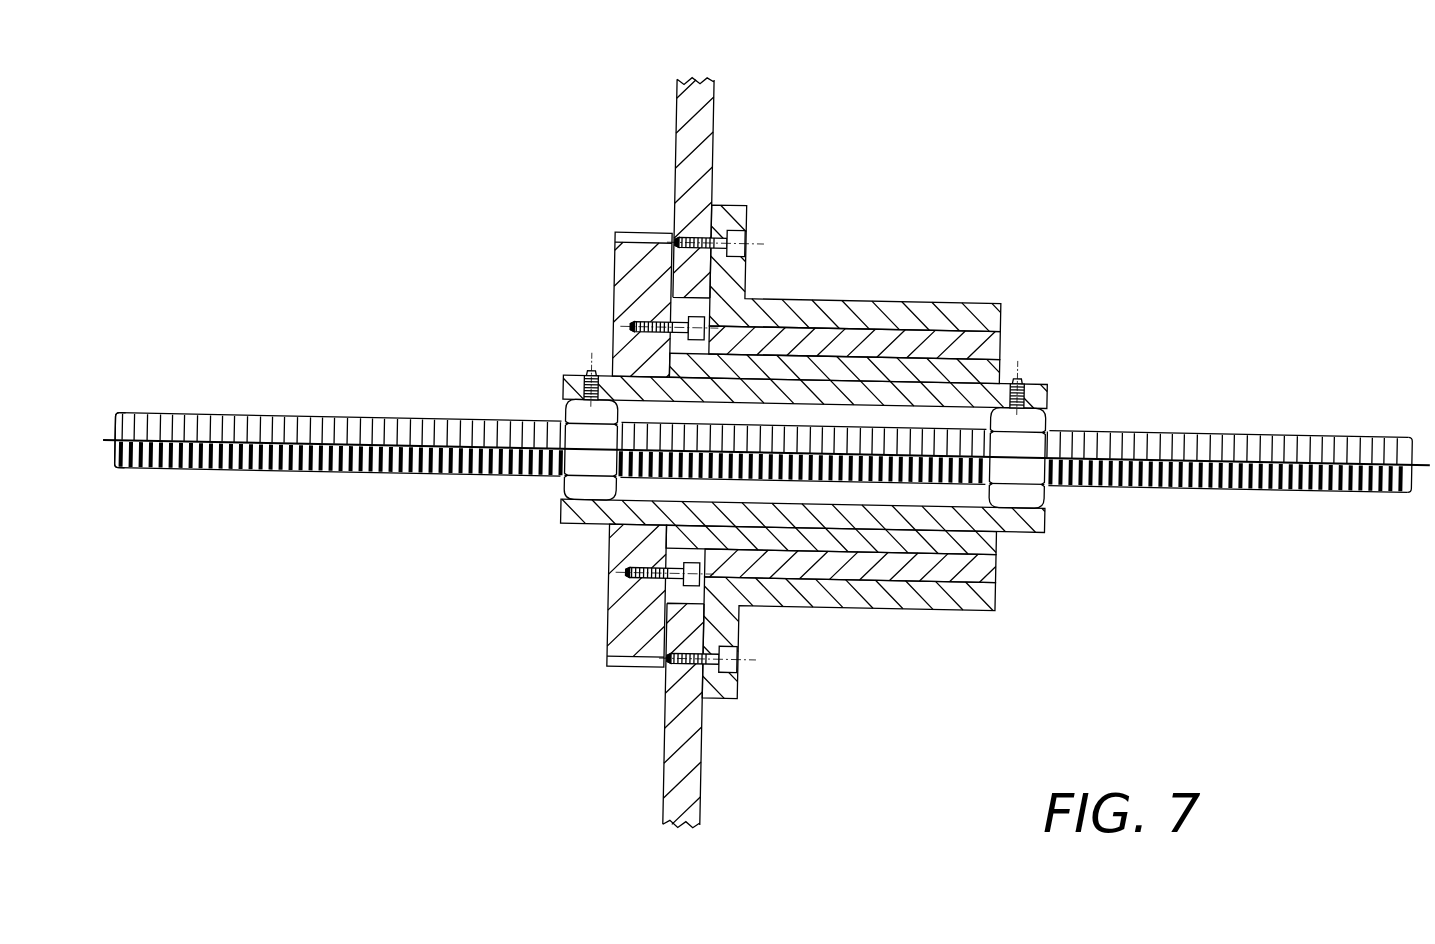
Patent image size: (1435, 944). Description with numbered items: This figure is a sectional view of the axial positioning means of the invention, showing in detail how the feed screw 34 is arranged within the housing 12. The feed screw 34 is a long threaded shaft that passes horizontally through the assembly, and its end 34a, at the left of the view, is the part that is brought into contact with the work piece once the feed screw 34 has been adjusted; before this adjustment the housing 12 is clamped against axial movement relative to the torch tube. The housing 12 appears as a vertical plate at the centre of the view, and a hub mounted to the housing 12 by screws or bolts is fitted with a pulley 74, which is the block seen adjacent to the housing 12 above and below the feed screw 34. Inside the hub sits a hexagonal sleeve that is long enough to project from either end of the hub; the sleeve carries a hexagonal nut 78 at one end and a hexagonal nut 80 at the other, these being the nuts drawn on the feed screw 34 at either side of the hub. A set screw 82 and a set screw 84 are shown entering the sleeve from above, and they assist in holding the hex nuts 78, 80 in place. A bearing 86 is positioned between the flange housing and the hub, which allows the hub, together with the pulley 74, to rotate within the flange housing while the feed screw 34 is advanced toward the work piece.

The housing 12 is at (705, 130).
The feed screw 34 is at (322, 425).
The end of feed screw 34a is at (113, 415).
The pulley 74 is at (627, 258).
The hexagonal nut 78 is at (573, 484).
The hexagonal nut 80 is at (1033, 493).
The set screw 82 is at (586, 372).
The set screw 84 is at (1022, 378).
The bearing 86 is at (985, 567).